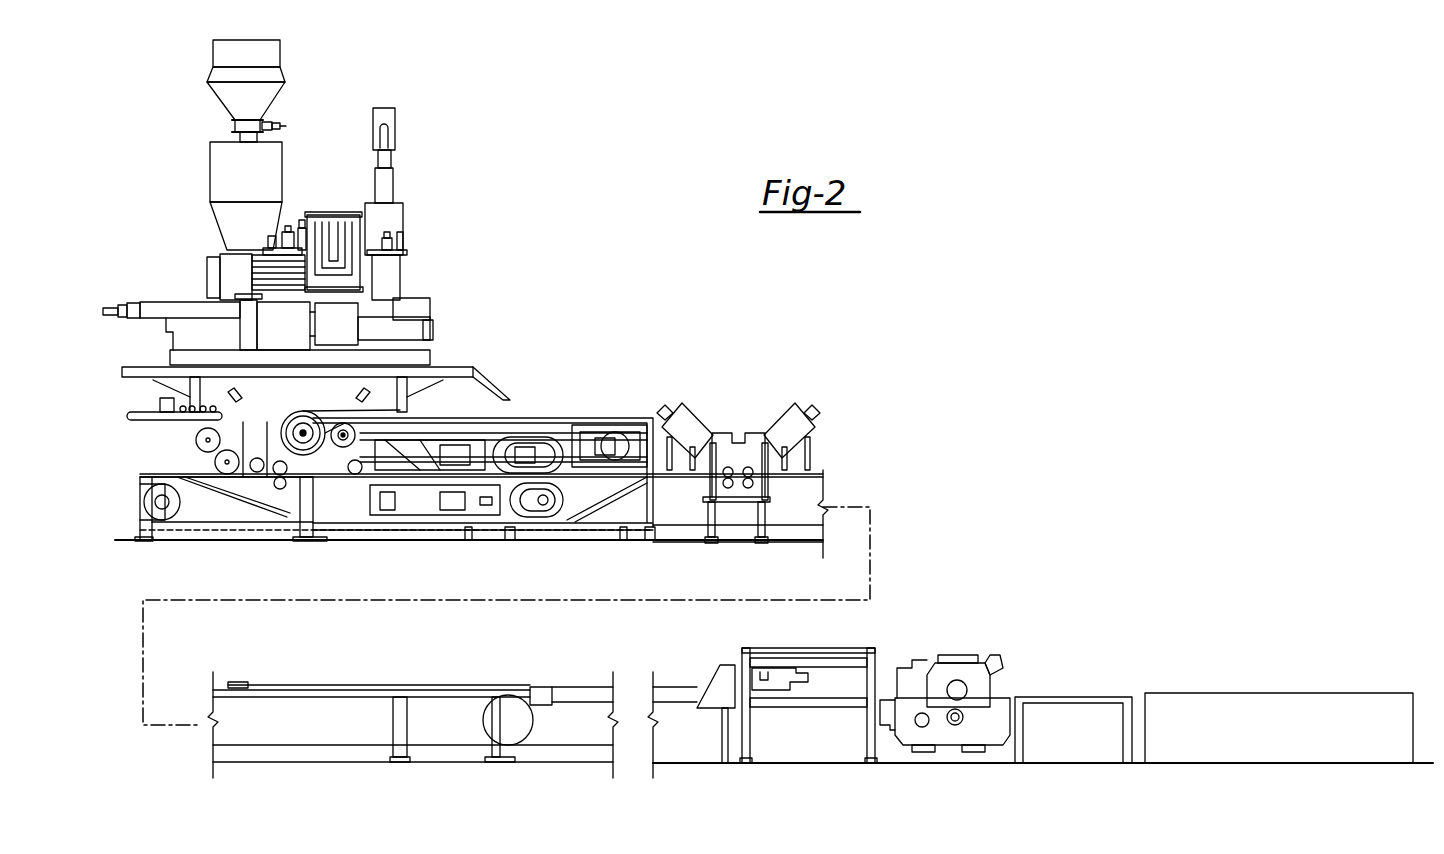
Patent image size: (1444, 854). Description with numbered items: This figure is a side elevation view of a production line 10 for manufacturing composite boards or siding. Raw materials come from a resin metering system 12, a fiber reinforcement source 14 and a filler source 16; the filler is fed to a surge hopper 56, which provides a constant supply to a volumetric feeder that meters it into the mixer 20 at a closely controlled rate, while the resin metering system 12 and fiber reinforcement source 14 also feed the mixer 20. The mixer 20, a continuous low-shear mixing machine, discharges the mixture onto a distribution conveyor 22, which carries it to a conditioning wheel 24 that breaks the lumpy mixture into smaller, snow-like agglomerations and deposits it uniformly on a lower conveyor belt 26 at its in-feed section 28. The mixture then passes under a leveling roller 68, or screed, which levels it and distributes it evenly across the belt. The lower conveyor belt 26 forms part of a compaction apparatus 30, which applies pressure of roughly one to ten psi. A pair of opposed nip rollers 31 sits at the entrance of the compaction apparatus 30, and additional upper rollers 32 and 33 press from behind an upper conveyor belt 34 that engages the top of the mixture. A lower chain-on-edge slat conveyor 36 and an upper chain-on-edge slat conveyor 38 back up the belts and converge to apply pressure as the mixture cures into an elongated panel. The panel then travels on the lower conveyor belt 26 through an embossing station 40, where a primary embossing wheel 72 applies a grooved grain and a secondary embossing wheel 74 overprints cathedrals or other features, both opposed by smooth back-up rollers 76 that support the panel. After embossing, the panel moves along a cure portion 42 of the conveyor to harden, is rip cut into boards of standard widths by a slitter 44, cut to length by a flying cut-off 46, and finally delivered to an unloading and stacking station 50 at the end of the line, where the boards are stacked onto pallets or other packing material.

The production line 10 is at (920, 375).
The resin metering system 12 is at (288, 235).
The fiber reinforcement source 14 is at (388, 183).
The filler source 16 is at (255, 112).
The mixer 20 is at (162, 308).
The distribution conveyor 22 is at (135, 410).
The conditioning wheel 24 is at (222, 466).
The lower conveyor belt 26 is at (248, 540).
The in-feed section 28 is at (183, 472).
The compaction apparatus 30 is at (524, 430).
The nip rollers 31 is at (280, 458).
The upper roller 32 is at (312, 505).
The upper roller 33 is at (358, 457).
The upper conveyor belt 34 is at (322, 416).
The lower chain-on-edge slat conveyor 36 is at (437, 518).
The upper chain-on-edge slat conveyor 38 is at (548, 437).
The embossing station 40 is at (726, 433).
The cure portion 42 is at (450, 693).
The slitter 44 is at (790, 652).
The flying cut-off 46 is at (953, 650).
The unloading and stacking station 50 is at (1303, 693).
The surge hopper 56 is at (217, 229).
The leveling roller 68 is at (256, 472).
The primary embossing wheel 72 is at (725, 468).
The secondary embossing wheel 74 is at (752, 468).
The back-up rollers 76 is at (748, 488).